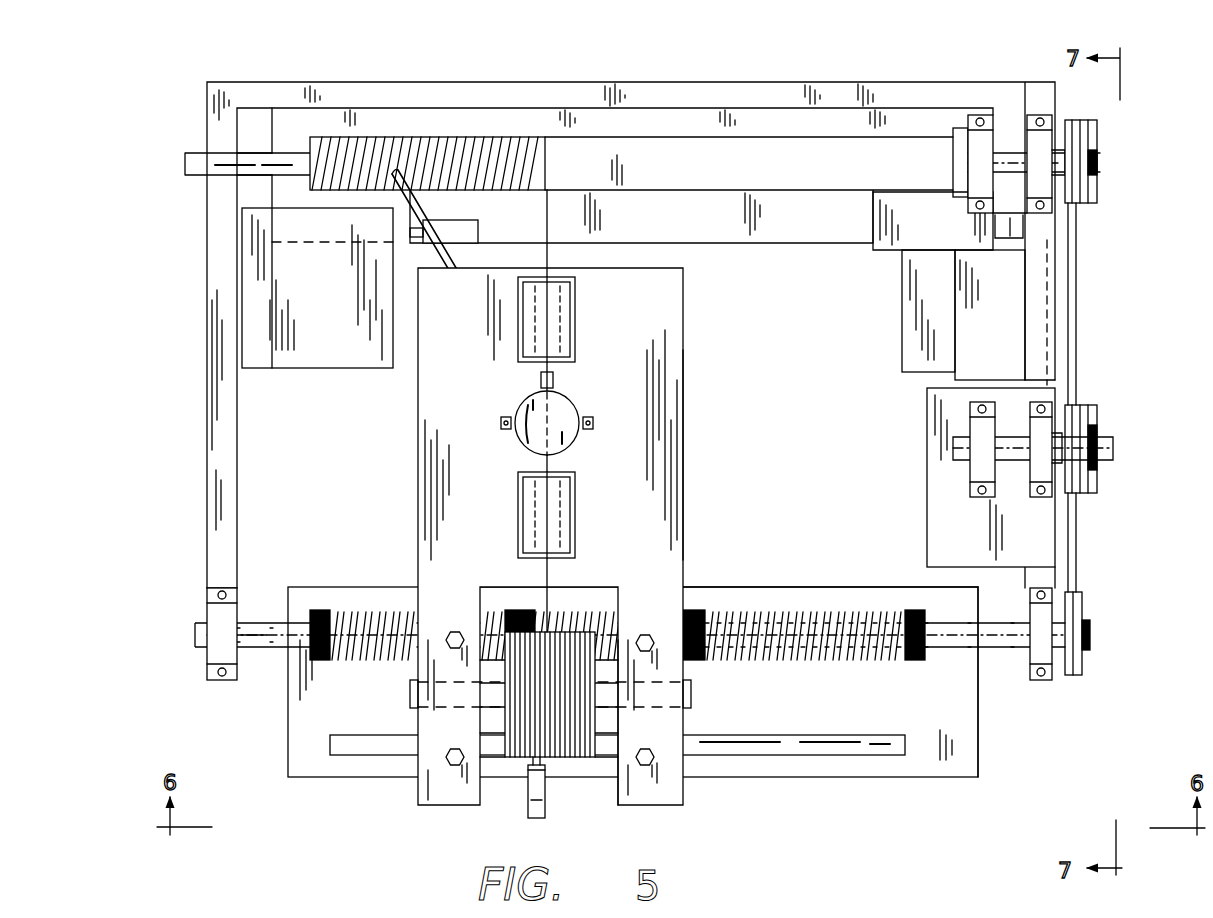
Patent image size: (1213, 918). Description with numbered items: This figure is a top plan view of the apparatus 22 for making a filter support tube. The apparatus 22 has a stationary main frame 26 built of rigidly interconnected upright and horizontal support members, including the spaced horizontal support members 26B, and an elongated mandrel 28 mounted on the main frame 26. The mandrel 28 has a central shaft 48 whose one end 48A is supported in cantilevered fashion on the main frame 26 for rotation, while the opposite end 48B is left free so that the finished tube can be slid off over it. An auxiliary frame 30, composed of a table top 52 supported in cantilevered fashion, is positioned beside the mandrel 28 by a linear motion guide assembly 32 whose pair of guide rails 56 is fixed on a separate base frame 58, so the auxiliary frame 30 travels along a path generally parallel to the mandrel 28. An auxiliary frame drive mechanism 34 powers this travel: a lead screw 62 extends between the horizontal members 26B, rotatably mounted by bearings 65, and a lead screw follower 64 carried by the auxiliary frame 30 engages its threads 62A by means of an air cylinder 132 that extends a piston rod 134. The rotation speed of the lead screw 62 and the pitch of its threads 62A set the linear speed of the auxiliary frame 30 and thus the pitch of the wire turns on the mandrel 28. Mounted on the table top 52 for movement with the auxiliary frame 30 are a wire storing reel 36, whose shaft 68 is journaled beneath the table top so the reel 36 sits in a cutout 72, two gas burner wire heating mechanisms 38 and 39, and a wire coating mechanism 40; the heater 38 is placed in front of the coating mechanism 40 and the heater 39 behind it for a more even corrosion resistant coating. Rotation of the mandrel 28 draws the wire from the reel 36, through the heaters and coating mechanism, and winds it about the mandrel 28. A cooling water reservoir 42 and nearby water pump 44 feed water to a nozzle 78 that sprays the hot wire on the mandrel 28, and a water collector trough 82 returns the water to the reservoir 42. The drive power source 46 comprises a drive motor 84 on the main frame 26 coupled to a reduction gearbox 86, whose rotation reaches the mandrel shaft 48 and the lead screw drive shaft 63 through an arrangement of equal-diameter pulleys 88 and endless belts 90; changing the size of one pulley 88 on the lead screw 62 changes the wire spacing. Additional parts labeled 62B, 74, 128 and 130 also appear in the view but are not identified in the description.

The apparatus 22 is at (1138, 212).
The stationary main frame 26 is at (206, 528).
The horizontal support members 26B is at (630, 86).
The elongated mandrel 28 is at (664, 190).
The auxiliary frame 30 is at (686, 462).
The linear motion guide assembly 32 is at (712, 727).
The auxiliary frame drive mechanism 34 is at (708, 586).
The wire storing reel 36 is at (500, 700).
The wire heating mechanism 38 is at (580, 518).
The wire heating mechanism 39 is at (580, 314).
The wire coating mechanism 40 is at (582, 404).
The cooling water reservoir 42 is at (330, 370).
The water pump 44 is at (470, 220).
The drive power source 46 is at (1132, 425).
The central shaft 48 is at (283, 147).
The supported end of central shaft 48A is at (1010, 160).
The free end of central shaft 48B is at (200, 158).
The table top 52 is at (692, 342).
The guide rails 56 is at (815, 748).
The base frame 58 is at (962, 736).
The lead screw 62 is at (852, 608).
The threads 62A is at (776, 662).
The shaft end portion 62B is at (320, 665).
The lead screw drive shaft 63 is at (946, 650).
The lead screw follower 64 is at (552, 782).
The bearings 65 is at (205, 660).
The reel shaft 68 is at (410, 695).
The cutout 72 is at (615, 765).
The wheel axle 74 is at (580, 444).
The nozzle 78 is at (456, 290).
The water collector trough 82 is at (410, 128).
The drive motor 84 is at (955, 303).
The reduction gearbox 86 is at (1010, 188).
The pulleys 88 is at (1075, 202).
The endless belts 90 is at (1077, 112).
The collar 128 is at (316, 610).
The coil spring 130 is at (395, 611).
The air cylinder 132 is at (533, 810).
The piston rod 134 is at (526, 776).